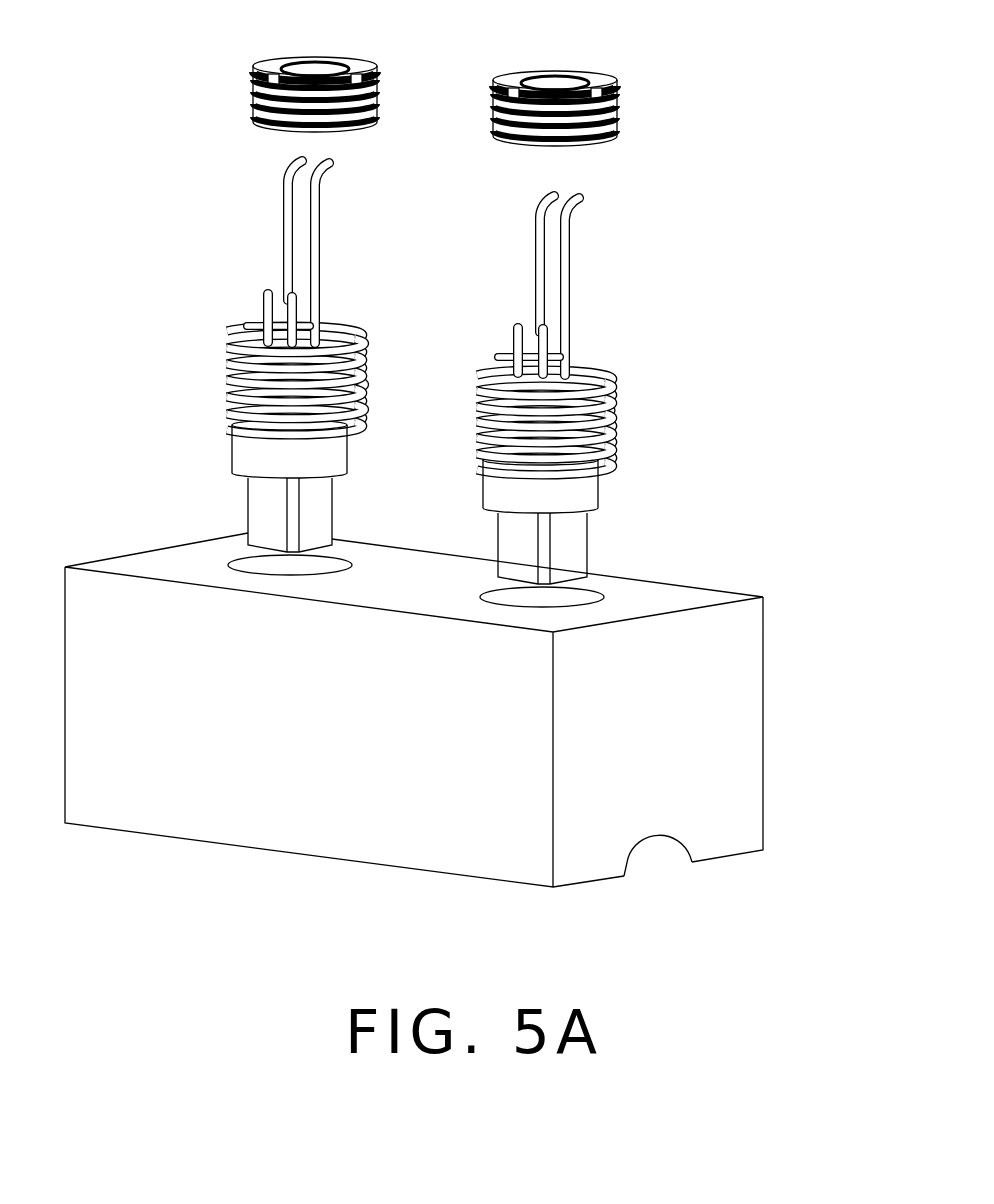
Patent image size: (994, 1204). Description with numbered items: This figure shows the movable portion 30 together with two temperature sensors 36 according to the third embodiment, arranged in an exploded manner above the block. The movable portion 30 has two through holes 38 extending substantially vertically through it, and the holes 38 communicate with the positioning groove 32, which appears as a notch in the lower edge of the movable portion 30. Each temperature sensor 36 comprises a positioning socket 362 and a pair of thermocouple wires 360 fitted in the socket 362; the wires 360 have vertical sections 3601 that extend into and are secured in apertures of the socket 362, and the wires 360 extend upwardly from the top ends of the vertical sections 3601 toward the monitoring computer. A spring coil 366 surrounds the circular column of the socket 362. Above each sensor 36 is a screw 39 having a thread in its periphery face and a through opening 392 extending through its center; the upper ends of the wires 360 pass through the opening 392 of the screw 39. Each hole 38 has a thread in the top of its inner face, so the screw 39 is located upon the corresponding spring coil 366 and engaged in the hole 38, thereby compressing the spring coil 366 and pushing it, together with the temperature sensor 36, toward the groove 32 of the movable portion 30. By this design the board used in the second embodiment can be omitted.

The movable portion 30 is at (468, 735).
The positioning groove 32 is at (657, 843).
The temperature sensor 36 is at (575, 484).
The thermocouple wires 360 is at (288, 254).
The vertical sections 3601 is at (568, 233).
The positioning socket 362 is at (268, 510).
The spring coil 366 is at (608, 335).
The through hole 38 is at (570, 600).
The screw 39 is at (625, 79).
The through opening 392 is at (572, 73).